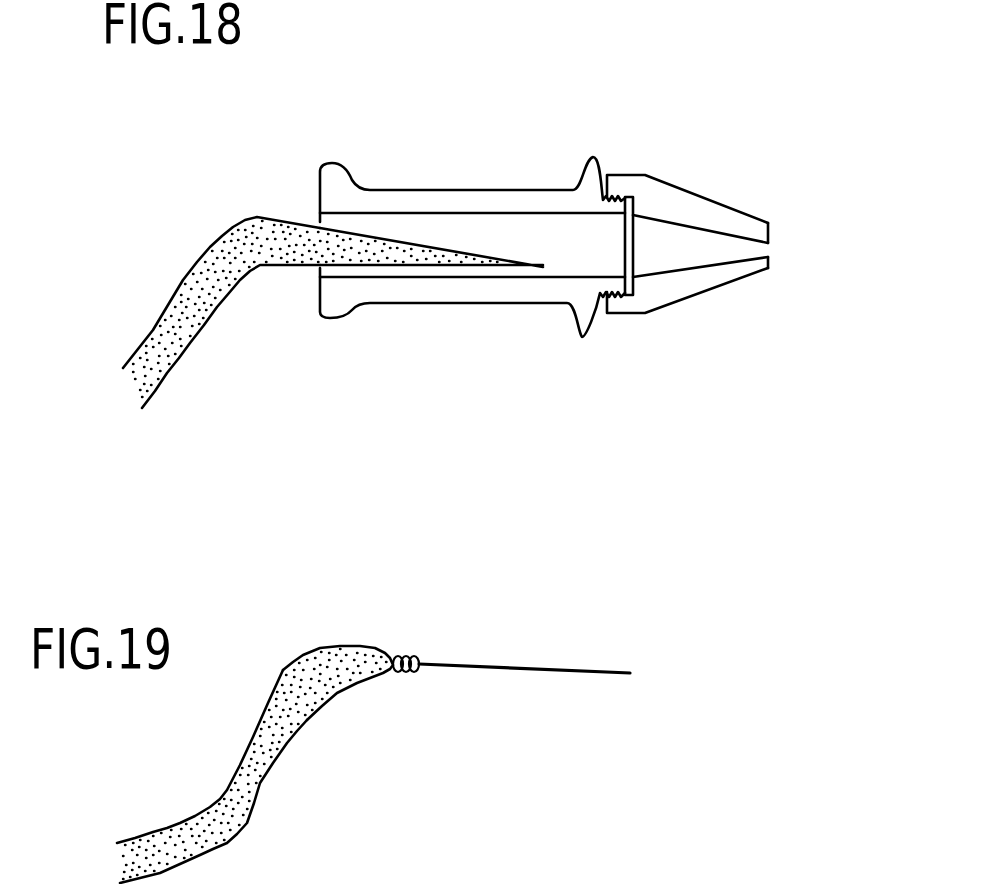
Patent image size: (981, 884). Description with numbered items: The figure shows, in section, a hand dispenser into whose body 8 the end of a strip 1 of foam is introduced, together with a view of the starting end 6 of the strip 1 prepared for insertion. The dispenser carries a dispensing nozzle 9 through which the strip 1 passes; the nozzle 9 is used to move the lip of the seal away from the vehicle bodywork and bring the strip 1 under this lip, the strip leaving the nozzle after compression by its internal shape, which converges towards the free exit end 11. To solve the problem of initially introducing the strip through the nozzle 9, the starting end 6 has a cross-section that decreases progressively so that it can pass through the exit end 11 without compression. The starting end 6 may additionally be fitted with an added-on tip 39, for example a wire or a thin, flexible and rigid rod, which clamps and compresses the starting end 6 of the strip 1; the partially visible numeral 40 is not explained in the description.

In FIG. 18, the strip 1 is at (212, 357).
In FIG. 19, the strip 1 is at (213, 782).
In FIG. 18, the starting end 6 is at (450, 258).
In FIG. 19, the starting end 6 is at (352, 660).
In FIG. 18, the hub 8 is at (590, 128).
In FIG. 18, the dispensing nozzle 9 is at (702, 178).
In FIG. 18, the free exit end 11 is at (782, 248).
In FIG. 19, the added-on tip 39 is at (553, 667).
In FIG. 19, the wire end 40 is at (615, 877).